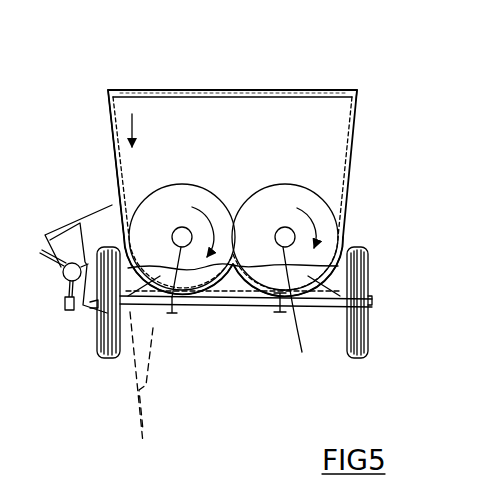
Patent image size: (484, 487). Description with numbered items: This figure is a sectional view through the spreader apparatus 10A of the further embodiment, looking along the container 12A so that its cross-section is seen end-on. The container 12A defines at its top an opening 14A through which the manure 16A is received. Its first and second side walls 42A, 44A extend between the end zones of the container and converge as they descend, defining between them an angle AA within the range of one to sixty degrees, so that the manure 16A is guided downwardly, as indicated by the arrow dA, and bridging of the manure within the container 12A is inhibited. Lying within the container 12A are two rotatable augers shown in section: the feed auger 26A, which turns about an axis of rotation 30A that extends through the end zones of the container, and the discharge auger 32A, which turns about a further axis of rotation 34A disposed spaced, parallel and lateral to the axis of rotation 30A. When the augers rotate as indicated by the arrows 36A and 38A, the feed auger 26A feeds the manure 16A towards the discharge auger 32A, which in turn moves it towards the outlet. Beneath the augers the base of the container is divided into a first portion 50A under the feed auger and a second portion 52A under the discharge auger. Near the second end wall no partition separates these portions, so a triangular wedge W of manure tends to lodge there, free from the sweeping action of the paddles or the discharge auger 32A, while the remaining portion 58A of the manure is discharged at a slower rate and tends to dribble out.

The spreader apparatus 10A is at (366, 106).
The container 12A is at (345, 203).
The opening 14A is at (338, 90).
The manure 16A is at (269, 106).
The feed auger 26A is at (328, 232).
The axis of rotation 30A is at (287, 285).
The discharge auger 32A is at (145, 200).
The further axis of rotation 34A is at (172, 313).
The arrow 36A is at (298, 208).
The arrow 38A is at (192, 206).
The first side wall 42A is at (358, 97).
The second side wall 44A is at (108, 108).
The first portion of the base 50A is at (252, 307).
The second portion of the base 52A is at (200, 300).
The remaining portion of manure 58A is at (346, 290).
The triangular wedge of manure W is at (222, 298).
The arrow dA is at (131, 128).
The angle AA is at (143, 418).